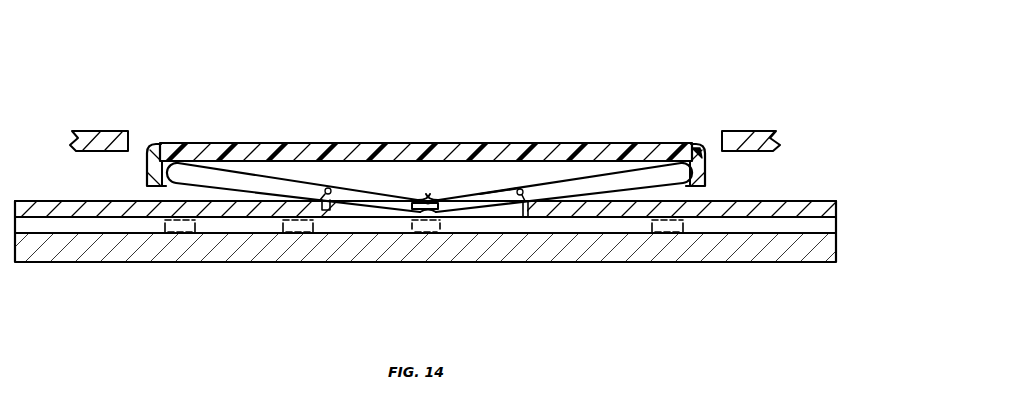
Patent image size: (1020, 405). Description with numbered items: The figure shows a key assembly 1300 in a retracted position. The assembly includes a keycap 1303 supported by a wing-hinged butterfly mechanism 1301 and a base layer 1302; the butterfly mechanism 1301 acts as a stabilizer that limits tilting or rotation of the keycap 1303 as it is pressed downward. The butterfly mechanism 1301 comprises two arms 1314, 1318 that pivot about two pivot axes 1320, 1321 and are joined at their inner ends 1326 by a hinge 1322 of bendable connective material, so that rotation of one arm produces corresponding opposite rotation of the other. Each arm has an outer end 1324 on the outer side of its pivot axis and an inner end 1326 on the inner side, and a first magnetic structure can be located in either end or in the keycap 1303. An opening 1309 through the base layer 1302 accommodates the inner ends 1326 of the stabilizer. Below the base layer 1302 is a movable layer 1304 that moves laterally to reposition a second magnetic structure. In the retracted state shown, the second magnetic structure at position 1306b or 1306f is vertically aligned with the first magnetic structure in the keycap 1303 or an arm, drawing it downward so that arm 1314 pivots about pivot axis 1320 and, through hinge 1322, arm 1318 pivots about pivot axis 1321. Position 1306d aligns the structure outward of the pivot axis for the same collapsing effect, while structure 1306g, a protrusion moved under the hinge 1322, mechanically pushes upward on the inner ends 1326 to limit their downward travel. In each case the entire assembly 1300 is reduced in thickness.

The key assembly 1300 is at (691, 76).
The butterfly mechanism 1301 is at (636, 168).
The base layer 1302 is at (836, 208).
The keycap 1303 is at (573, 145).
The movable layer 1304 is at (836, 250).
The second magnetic structure 1306b is at (176, 222).
The second magnetic structure 1306d is at (290, 222).
The second magnetic structure 1306f is at (672, 222).
The second magnetic structure 1306g is at (432, 233).
The opening 1309 is at (497, 190).
The arm 1314 is at (243, 170).
The arm 1318 is at (470, 197).
The pivot axis 1320 is at (323, 212).
The pivot axis 1321 is at (524, 198).
The hinge 1322 is at (414, 212).
The outer end 1324 is at (174, 168).
The inner end 1326 is at (431, 200).